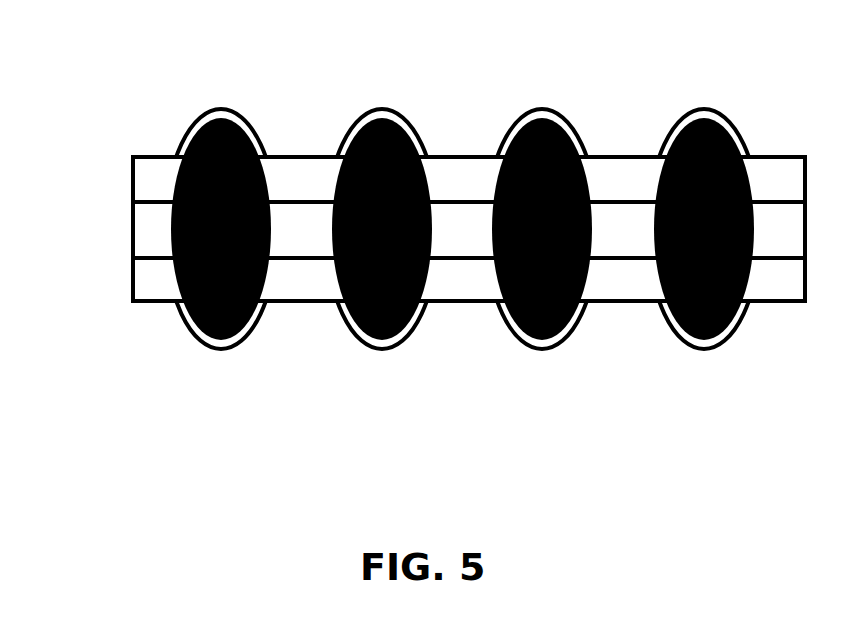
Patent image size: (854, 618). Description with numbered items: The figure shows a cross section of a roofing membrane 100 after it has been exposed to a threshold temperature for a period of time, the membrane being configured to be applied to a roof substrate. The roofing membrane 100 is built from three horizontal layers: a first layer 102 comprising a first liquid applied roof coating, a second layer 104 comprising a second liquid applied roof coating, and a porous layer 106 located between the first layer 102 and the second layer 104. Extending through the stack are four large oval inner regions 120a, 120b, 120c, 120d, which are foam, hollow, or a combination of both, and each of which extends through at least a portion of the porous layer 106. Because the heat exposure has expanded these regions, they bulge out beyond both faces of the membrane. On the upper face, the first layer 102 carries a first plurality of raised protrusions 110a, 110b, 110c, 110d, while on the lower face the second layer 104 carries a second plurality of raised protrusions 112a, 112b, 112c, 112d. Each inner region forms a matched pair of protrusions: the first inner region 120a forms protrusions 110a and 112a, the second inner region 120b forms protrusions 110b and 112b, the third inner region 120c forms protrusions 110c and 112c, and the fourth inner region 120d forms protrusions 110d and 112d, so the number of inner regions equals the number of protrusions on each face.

The roofing membrane 100 is at (312, 72).
The first layer 102 is at (777, 153).
The second layer 104 is at (780, 303).
The porous layer 106 is at (133, 230).
The first raised protrusion of the first plurality 110a is at (197, 118).
The second raised protrusion of the first plurality 110b is at (383, 110).
The third raised protrusion of the first plurality 110c is at (540, 110).
The fourth raised protrusion of the first plurality 110d is at (695, 112).
The first raised protrusion of the second plurality 112a is at (221, 348).
The second raised protrusion of the second plurality 112b is at (382, 348).
The third raised protrusion of the second plurality 112c is at (542, 345).
The fourth raised protrusion of the second plurality 112d is at (707, 348).
The first inner region 120a is at (185, 322).
The second inner region 120b is at (358, 320).
The third inner region 120c is at (510, 323).
The fourth inner region 120d is at (673, 320).